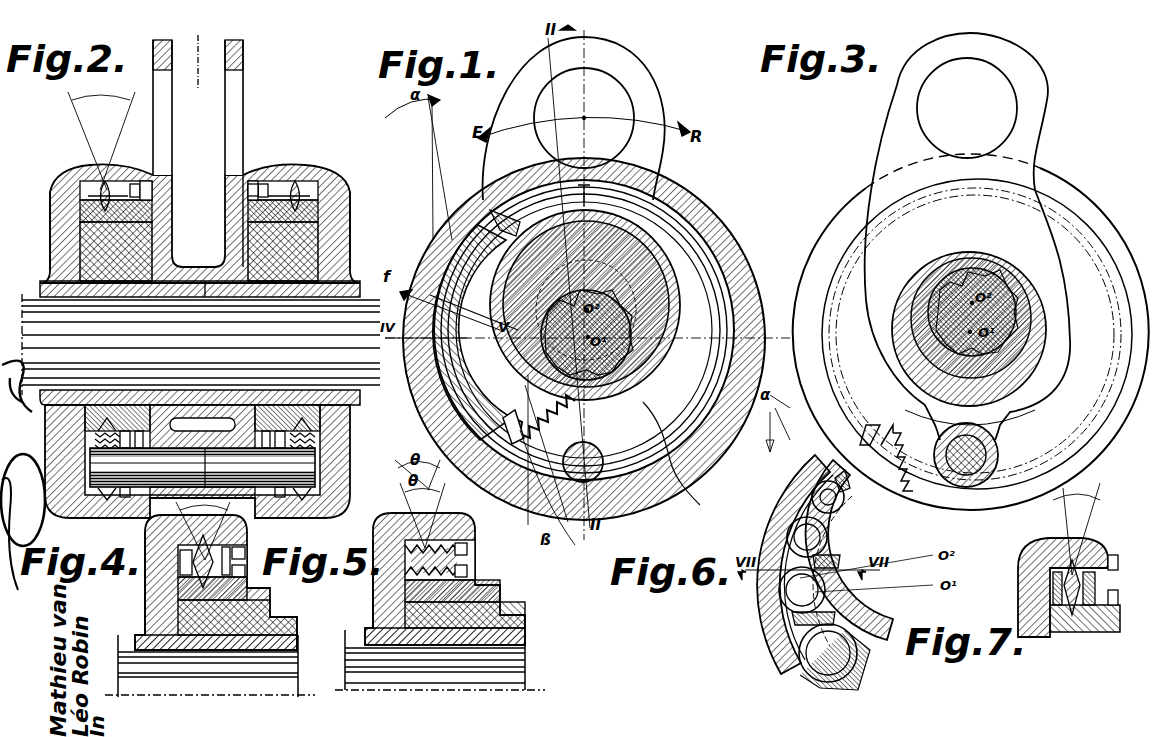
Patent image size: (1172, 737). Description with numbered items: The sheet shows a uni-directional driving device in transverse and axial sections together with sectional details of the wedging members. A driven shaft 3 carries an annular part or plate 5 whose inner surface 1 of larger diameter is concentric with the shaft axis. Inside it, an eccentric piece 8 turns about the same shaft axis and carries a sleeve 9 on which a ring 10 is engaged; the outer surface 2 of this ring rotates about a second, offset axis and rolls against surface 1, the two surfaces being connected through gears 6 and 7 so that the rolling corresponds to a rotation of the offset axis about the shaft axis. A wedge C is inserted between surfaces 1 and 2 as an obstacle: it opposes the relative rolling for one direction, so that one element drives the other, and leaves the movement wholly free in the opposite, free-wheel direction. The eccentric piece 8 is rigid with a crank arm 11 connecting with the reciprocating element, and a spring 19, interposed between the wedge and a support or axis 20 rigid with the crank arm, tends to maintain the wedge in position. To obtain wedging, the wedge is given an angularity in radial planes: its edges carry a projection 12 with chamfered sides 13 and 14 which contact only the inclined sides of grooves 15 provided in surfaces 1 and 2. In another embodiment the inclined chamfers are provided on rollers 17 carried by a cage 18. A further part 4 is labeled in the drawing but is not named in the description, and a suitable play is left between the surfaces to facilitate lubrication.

In FIG. 2, the inner surface 1 is at (115, 188).
In FIG. 4, the inner surface 1 is at (245, 545).
In FIG. 1, the inner surface 1 is at (735, 348).
In FIG. 6, the inner surface 1 is at (790, 548).
In FIG. 2, the outer surface 2 is at (80, 207).
In FIG. 1, the outer surface 2 is at (698, 318).
In FIG. 6, the outer surface 2 is at (835, 562).
In FIG. 2, the driven shaft 3 is at (22, 365).
In FIG. 4, the driven shaft 3 is at (132, 681).
In FIG. 5, the driven shaft 3 is at (520, 657).
In FIG. 1, the driven shaft 3 is at (640, 352).
In FIG. 3, the driven shaft 3 is at (1005, 330).
In FIG. 2, the housing / lever body 4 is at (65, 178).
In FIG. 4, the housing / lever body 4 is at (180, 545).
In FIG. 5, the housing / lever body 4 is at (403, 522).
In FIG. 1, the housing / lever body 4 is at (472, 205).
In FIG. 3, the housing / lever body 4 is at (1062, 180).
In FIG. 7, the housing / lever body 4 is at (1035, 543).
In FIG. 2, the annular part 5 is at (60, 230).
In FIG. 4, the annular part 5 is at (147, 604).
In FIG. 5, the annular part 5 is at (380, 585).
In FIG. 2, the gear 6 is at (226, 186).
In FIG. 4, the gear 6 is at (245, 572).
In FIG. 5, the gear 6 is at (468, 565).
In FIG. 3, the gear 6 is at (870, 350).
In FIG. 7, the gear 6 is at (1118, 598).
In FIG. 2, the gear 7 is at (260, 183).
In FIG. 4, the gear 7 is at (245, 553).
In FIG. 5, the gear 7 is at (468, 545).
In FIG. 1, the gear 7 is at (715, 370).
In FIG. 3, the gear 7 is at (832, 398).
In FIG. 7, the gear 7 is at (1118, 562).
In FIG. 2, the eccentric piece 8 is at (160, 260).
In FIG. 4, the eccentric piece 8 is at (265, 616).
In FIG. 5, the eccentric piece 8 is at (498, 598).
In FIG. 1, the eccentric piece 8 is at (648, 240).
In FIG. 3, the eccentric piece 8 is at (980, 260).
In FIG. 2, the sleeve 9 is at (85, 281).
In FIG. 4, the sleeve 9 is at (292, 650).
In FIG. 5, the sleeve 9 is at (520, 640).
In FIG. 1, the sleeve 9 is at (660, 268).
In FIG. 3, the sleeve 9 is at (1008, 275).
In FIG. 2, the ring 10 is at (152, 215).
In FIG. 4, the ring 10 is at (270, 596).
In FIG. 5, the ring 10 is at (480, 592).
In FIG. 1, the ring 10 is at (686, 456).
In FIG. 6, the ring 10 is at (720, 497).
In FIG. 7, the ring 10 is at (1105, 626).
In FIG. 2, the crank arm 11 is at (244, 62).
In FIG. 1, the crank arm 11 is at (655, 105).
In FIG. 3, the crank arm 11 is at (1040, 108).
In FIG. 4, the projection 12 is at (178, 556).
In FIG. 5, the projection 12 is at (446, 537).
In FIG. 1, the projection 12 is at (442, 520).
In FIG. 4, the chamfered side 13 is at (195, 548).
In FIG. 6, the chamfered side 13 is at (790, 672).
In FIG. 7, the chamfered side 13 is at (1068, 560).
In FIG. 4, the chamfered side 14 is at (215, 540).
In FIG. 6, the chamfered side 14 is at (790, 672).
In FIG. 7, the chamfered side 14 is at (1095, 570).
In FIG. 2, the groove 15 is at (100, 182).
In FIG. 1, the groove 15 is at (640, 292).
In FIG. 3, the groove 15 is at (1112, 514).
In FIG. 7, the groove 15 is at (1080, 555).
In FIG. 6, the roller 17 is at (798, 590).
In FIG. 7, the roller 17 is at (1053, 580).
In FIG. 6, the cage 18 is at (850, 612).
In FIG. 2, the spring 19 is at (320, 432).
In FIG. 1, the spring 19 is at (570, 433).
In FIG. 3, the spring 19 is at (915, 455).
In FIG. 2, the support or axis 20 is at (318, 462).
In FIG. 1, the support or axis 20 is at (603, 460).
In FIG. 3, the support or axis 20 is at (968, 490).
In FIG. 5, the wedge C is at (378, 590).
In FIG. 1, the wedge C is at (458, 397).